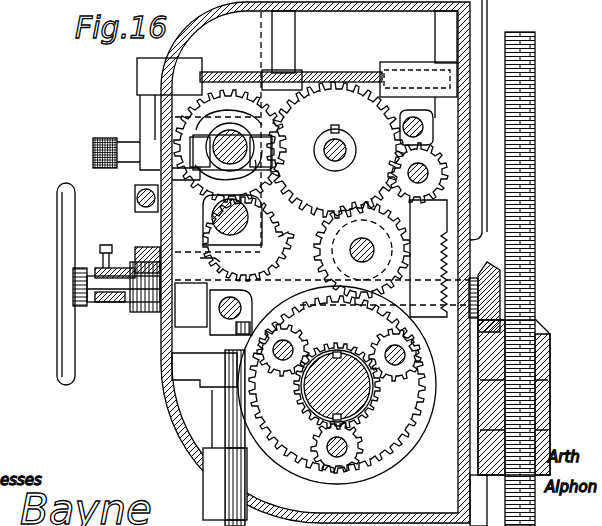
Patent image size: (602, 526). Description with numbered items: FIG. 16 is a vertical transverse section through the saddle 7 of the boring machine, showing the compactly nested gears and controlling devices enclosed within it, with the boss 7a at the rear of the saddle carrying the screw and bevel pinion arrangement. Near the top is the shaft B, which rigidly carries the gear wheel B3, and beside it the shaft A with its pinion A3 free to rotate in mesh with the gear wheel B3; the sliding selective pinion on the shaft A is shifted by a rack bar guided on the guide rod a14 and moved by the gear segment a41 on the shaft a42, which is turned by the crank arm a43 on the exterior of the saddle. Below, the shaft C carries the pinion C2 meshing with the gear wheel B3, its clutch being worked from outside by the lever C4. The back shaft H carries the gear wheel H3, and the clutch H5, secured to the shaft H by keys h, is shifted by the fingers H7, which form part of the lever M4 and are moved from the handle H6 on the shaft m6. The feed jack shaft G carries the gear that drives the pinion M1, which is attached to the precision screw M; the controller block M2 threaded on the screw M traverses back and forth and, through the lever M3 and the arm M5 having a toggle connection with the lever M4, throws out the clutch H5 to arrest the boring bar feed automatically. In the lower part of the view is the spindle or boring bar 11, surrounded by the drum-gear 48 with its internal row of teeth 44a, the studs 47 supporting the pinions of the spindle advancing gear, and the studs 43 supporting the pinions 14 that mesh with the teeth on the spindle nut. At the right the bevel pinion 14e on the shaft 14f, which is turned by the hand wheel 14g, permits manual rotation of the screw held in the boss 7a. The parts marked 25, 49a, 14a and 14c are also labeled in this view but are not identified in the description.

The saddle 7 is at (324, 261).
The boss 7a is at (545, 433).
The gear wheel H3 is at (227, 95).
The crank arm a43 is at (147, 113).
The shaft a42 is at (333, 72).
The gear segment a41 is at (413, 112).
The guide rod a14 is at (433, 132).
The shaft B is at (346, 147).
The gear wheel B3 is at (360, 170).
The back shaft H is at (284, 177).
The shifting fingers H7 is at (224, 133).
The clutch H5 is at (242, 168).
The keys h is at (250, 176).
The lever M4 is at (170, 170).
The lever H6 is at (136, 202).
The shaft m6 is at (141, 250).
The operating lever C4 is at (133, 258).
The hand wheel 14g is at (62, 236).
The shaft 14f is at (113, 304).
The lever M3 is at (198, 318).
The precision screw M is at (232, 324).
The controller block M2 is at (228, 346).
The arm M5 is at (214, 264).
The vertical shaft 25 is at (222, 403).
The internal row of teeth 44a is at (280, 367).
The drum-gear 48 is at (267, 448).
The studs 43 is at (337, 462).
The carrier plate 49a is at (356, 415).
The spindle 11 is at (358, 386).
The studs 47 is at (388, 346).
The pinion M1 is at (296, 334).
The shaft C is at (374, 250).
The pinion C2 is at (362, 250).
The feed jack shaft G is at (248, 238).
The pinion A3 is at (407, 162).
The shaft A is at (418, 173).
The pinions 14 is at (532, 229).
The bevel pinion 14e is at (530, 271).
The nut 14a is at (543, 321).
The nut collar 14c is at (543, 381).